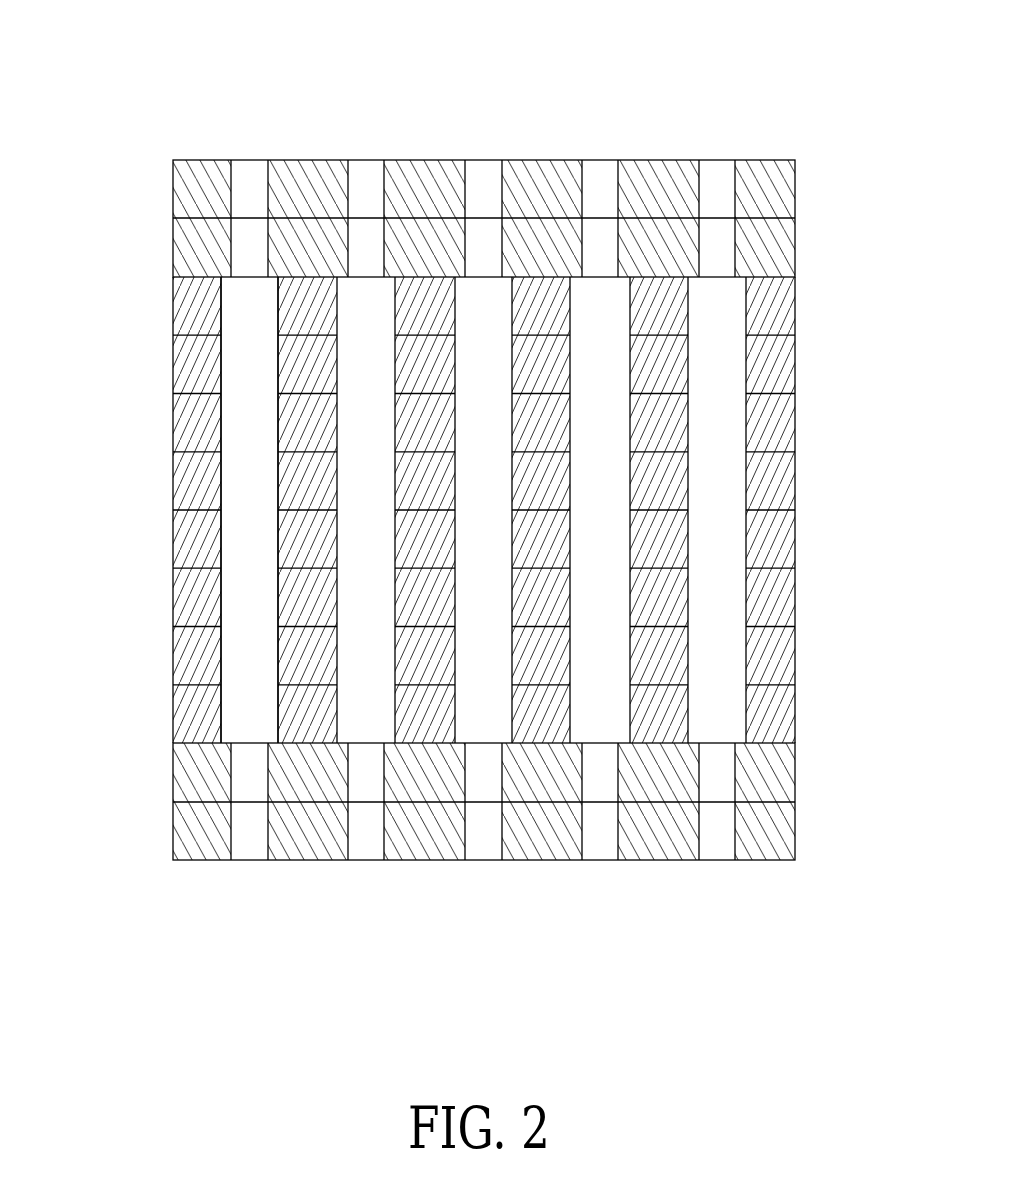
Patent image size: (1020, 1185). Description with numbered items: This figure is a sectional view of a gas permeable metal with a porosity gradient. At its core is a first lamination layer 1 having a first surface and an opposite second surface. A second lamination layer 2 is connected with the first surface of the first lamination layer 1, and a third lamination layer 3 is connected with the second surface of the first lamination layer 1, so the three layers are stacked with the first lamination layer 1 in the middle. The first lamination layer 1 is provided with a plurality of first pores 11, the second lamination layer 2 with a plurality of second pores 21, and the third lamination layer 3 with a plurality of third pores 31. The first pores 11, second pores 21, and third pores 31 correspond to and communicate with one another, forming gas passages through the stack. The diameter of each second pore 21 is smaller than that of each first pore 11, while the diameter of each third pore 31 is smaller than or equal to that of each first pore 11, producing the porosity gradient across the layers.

The first lamination layer 1 is at (192, 593).
The first pores 11 is at (259, 405).
The second lamination layer 2 is at (796, 186).
The second pores 21 is at (712, 189).
The third lamination layer 3 is at (767, 852).
The third pores 31 is at (724, 823).